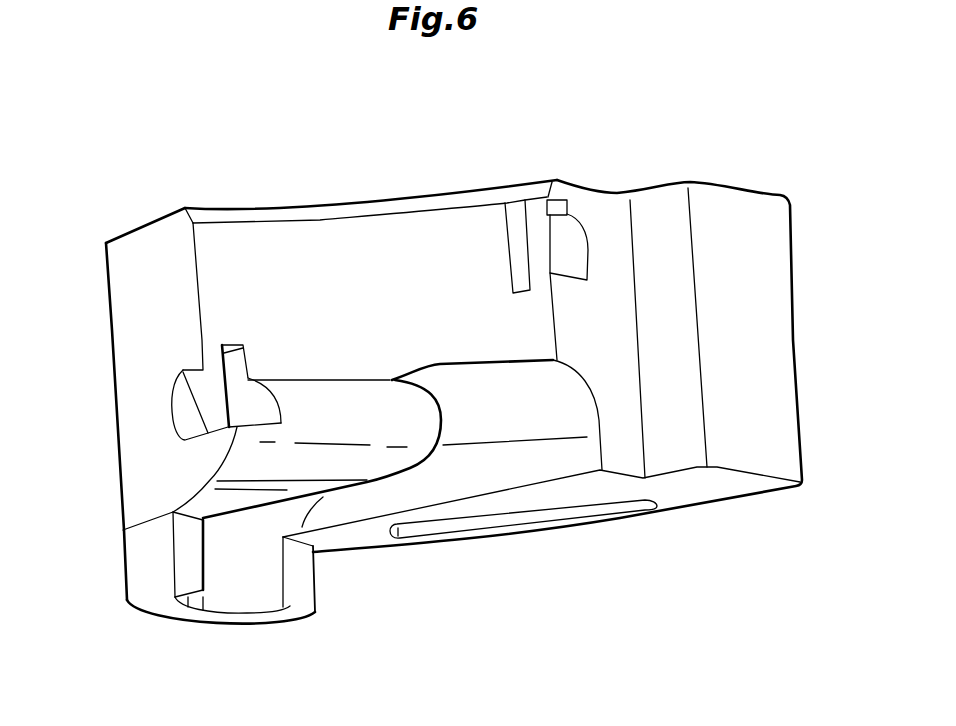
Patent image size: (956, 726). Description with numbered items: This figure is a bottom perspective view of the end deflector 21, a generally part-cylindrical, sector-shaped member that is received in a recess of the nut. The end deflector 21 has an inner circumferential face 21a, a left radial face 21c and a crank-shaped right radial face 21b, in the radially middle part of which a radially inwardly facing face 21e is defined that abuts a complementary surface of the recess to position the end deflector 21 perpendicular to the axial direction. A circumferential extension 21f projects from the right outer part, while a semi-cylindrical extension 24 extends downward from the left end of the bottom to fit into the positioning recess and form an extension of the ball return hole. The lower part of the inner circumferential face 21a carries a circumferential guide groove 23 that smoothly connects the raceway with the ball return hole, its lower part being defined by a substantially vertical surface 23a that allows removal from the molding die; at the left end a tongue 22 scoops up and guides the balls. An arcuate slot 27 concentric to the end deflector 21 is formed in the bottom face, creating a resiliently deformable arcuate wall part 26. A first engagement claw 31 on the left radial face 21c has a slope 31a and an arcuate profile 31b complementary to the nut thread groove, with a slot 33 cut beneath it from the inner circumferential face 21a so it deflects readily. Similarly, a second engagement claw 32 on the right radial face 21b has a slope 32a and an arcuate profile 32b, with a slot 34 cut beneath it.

The end deflector 21 is at (208, 205).
The inner circumferential face 21a is at (363, 250).
The right radial face 21b is at (740, 225).
The left radial face 21c is at (125, 302).
The radially inwardly facing face 21e is at (672, 227).
The circumferential extension 21f is at (782, 425).
The tongue 22 is at (370, 433).
The circumferential guide groove 23 is at (492, 423).
The substantially vertical surface 23a is at (533, 470).
The semi-cylindrical extension 24 is at (130, 578).
The resiliently deformable arcuate wall part 26 is at (560, 530).
The arcuate slot 27 is at (630, 508).
The first engagement claw 31 is at (173, 380).
The slope 31a is at (187, 420).
The arcuate profile 31b is at (173, 393).
The second engagement claw 32 is at (571, 207).
The slope 32a is at (577, 233).
The arcuate profile 32b is at (590, 247).
The slot 33 is at (244, 360).
The slot 34 is at (517, 223).